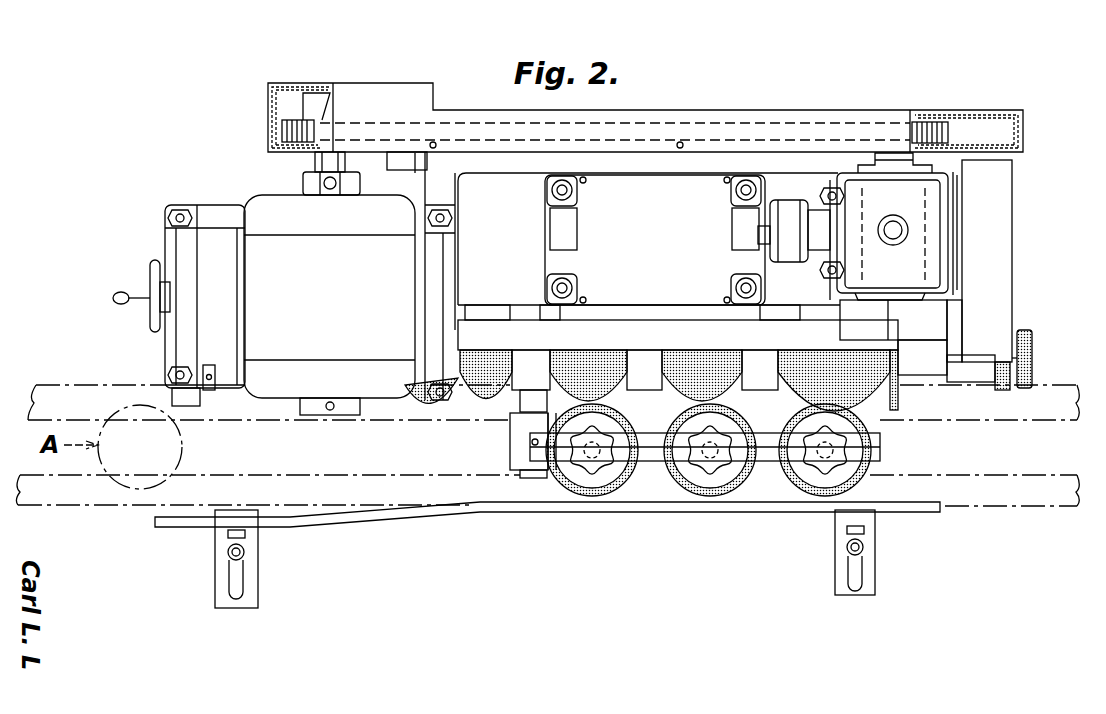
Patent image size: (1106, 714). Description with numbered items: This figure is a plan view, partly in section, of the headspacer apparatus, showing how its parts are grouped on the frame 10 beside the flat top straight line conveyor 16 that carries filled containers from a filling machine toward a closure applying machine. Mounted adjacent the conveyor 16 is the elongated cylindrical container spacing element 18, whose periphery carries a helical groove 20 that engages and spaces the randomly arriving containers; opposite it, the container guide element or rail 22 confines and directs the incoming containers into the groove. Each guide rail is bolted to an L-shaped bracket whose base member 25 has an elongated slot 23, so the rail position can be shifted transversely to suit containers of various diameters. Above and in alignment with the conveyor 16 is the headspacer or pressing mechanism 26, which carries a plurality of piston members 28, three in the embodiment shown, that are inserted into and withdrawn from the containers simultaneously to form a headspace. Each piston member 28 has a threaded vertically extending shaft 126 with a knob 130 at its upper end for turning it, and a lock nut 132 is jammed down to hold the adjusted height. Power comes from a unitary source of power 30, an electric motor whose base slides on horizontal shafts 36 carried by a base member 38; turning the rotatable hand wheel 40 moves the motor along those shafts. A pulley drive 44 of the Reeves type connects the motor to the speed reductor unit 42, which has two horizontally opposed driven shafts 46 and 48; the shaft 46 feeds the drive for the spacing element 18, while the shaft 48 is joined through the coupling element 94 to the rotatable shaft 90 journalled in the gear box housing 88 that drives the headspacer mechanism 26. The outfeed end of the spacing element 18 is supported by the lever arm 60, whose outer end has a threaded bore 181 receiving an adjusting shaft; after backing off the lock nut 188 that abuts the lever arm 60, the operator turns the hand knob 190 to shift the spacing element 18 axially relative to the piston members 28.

The frame 10 is at (1025, 298).
The flat top straight line conveyor 16 is at (77, 385).
The cylindrical container spacing element 18 is at (425, 400).
The helical groove 20 is at (493, 395).
The container guide element or rail 22 is at (446, 520).
The elongated slot 23 is at (244, 576).
The base member 25 is at (258, 553).
The headspacer or pressing mechanism 26 is at (664, 484).
The piston member 28 is at (538, 495).
The unitary source of power 30 is at (250, 205).
The horizontal shafts 36 is at (210, 207).
The base member 38 is at (166, 378).
The rotatable hand wheel 40 is at (148, 270).
The speed reductor unit 42 is at (835, 172).
The pulley drive 44 is at (288, 122).
The driven shaft 46 is at (962, 217).
The driven shaft 48 is at (828, 215).
The lever arm 60 is at (975, 384).
The gear box housing 88 is at (610, 253).
The rotatable shaft 90 is at (758, 242).
The coupling element 94 is at (790, 248).
The threaded vertically extending shaft 126 is at (583, 497).
The knob 130 is at (562, 466).
The lock nut 132 is at (612, 472).
The threaded bore 181 is at (935, 376).
The lock nut 188 is at (1008, 388).
The hand knob 190 is at (1034, 364).